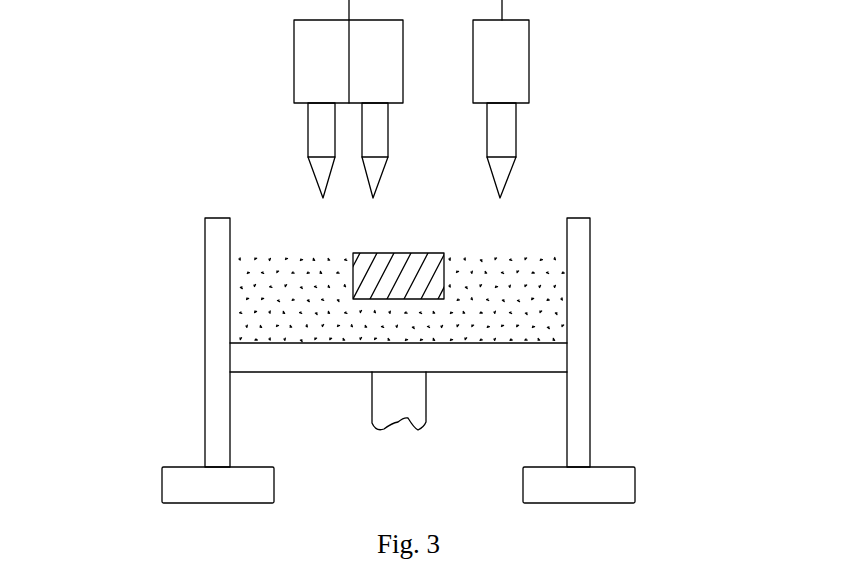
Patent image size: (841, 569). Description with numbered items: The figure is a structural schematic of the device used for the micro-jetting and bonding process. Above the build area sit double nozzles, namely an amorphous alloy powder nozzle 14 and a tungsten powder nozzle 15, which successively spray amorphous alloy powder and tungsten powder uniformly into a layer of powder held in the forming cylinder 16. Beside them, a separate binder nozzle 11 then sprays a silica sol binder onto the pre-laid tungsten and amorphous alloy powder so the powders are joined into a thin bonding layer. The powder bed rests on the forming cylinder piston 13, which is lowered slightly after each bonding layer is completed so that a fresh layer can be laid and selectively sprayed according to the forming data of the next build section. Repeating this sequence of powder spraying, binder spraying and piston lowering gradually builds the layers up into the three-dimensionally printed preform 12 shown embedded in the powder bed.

The binder nozzle 11 is at (502, 135).
The preform 12 is at (400, 272).
The forming cylinder piston 13 is at (398, 358).
The amorphous alloy powder nozzle 14 is at (365, 152).
The tungsten powder nozzle 15 is at (315, 152).
The forming cylinder 16 is at (220, 307).